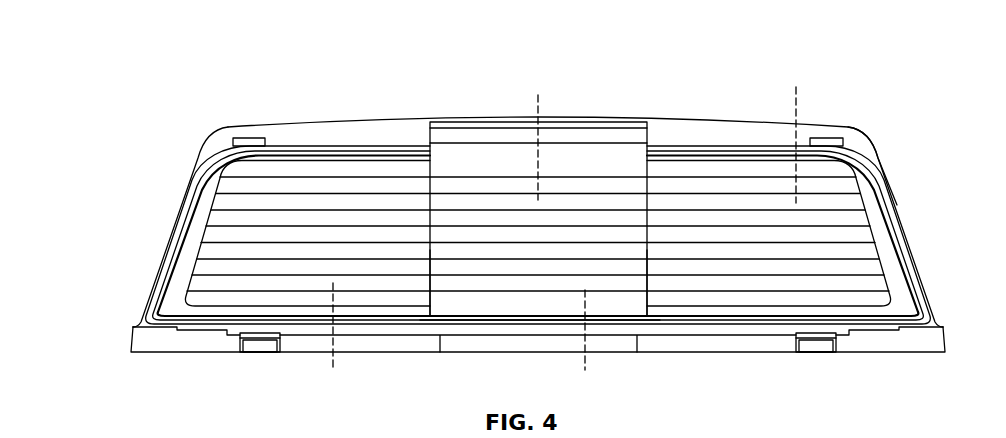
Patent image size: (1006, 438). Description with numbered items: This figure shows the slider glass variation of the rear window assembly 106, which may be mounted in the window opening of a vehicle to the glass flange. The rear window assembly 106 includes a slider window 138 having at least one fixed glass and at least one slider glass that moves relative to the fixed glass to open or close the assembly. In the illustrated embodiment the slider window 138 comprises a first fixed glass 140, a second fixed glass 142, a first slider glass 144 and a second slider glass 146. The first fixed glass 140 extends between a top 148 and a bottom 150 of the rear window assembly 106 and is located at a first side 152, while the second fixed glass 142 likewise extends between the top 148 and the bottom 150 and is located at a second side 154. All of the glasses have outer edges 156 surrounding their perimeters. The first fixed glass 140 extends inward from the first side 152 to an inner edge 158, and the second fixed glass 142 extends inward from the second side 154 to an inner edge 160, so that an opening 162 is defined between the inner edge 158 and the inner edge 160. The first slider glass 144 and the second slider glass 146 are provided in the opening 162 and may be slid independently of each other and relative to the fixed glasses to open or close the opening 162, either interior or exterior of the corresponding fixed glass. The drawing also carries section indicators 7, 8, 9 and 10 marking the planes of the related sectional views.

The rear window assembly 106 is at (656, 70).
The slider window 138 is at (660, 178).
The first fixed glass 140 is at (330, 168).
The second fixed glass 142 is at (832, 192).
The first slider glass 144 is at (470, 170).
The second slider glass 146 is at (580, 177).
The top 148 is at (303, 121).
The bottom 150 is at (293, 353).
The first side 152 is at (170, 215).
The second side 154 is at (920, 258).
The outer edges 156 is at (232, 127).
The inner edge 158 is at (431, 266).
The inner edge 160 is at (646, 262).
The opening 162 is at (503, 328).
The section line 7 is at (550, 200).
The section line 8 is at (820, 203).
The section line 9 is at (618, 370).
The section line 10 is at (366, 370).